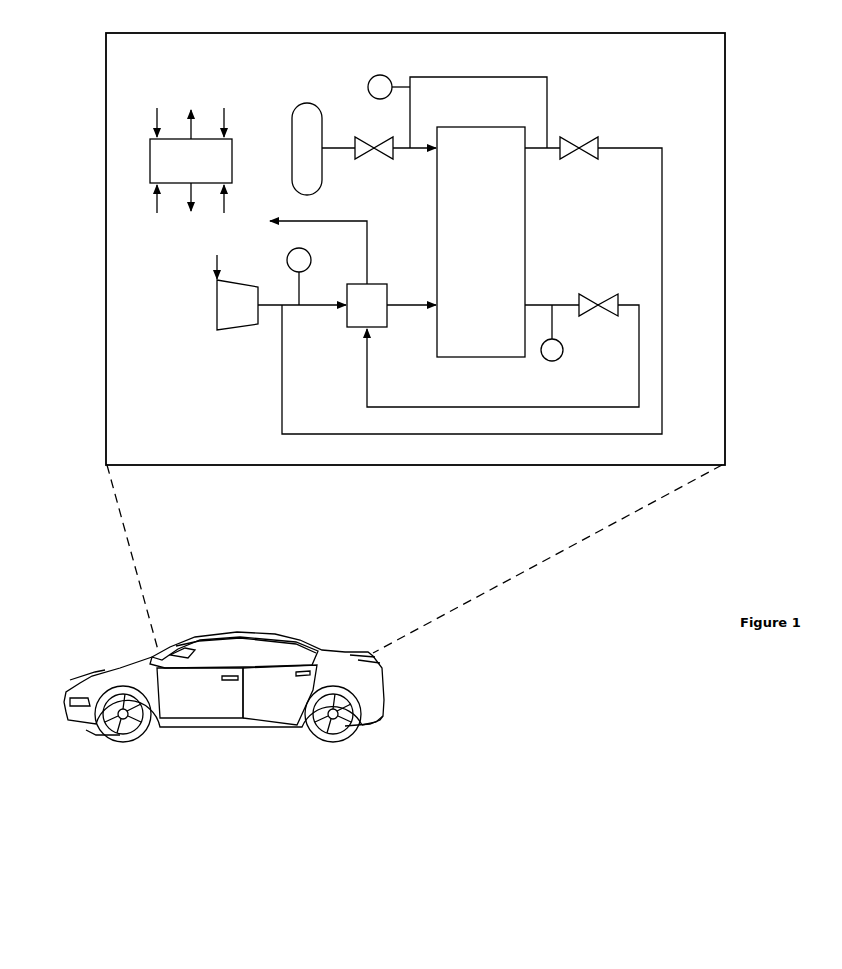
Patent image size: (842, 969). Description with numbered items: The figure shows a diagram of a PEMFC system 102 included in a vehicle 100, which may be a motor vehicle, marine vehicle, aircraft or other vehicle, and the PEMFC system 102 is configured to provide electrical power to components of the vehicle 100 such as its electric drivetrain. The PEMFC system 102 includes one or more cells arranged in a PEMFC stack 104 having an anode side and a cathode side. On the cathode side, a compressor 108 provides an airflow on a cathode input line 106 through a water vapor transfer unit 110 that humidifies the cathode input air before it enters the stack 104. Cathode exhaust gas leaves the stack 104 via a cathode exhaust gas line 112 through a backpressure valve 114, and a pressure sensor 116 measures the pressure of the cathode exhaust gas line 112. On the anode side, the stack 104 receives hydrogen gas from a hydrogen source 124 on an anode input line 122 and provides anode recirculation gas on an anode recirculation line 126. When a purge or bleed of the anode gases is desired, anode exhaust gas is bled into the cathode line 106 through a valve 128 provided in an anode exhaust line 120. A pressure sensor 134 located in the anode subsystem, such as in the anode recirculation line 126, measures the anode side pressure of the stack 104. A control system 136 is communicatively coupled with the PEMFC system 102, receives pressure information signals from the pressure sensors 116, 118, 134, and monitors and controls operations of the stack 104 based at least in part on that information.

The vehicle 100 is at (138, 658).
The PEMFC system 102 is at (143, 61).
The PEMFC stack 104 is at (493, 248).
The cathode input line 106 is at (270, 303).
The compressor 108 is at (250, 314).
The water vapor transfer unit 110 is at (379, 314).
The cathode exhaust gas line 112 is at (639, 355).
The backpressure valve 114 is at (594, 302).
The pressure sensor 116 is at (563, 348).
The pressure sensor 118 is at (311, 258).
The anode exhaust line 120 is at (662, 183).
The anode input line 122 is at (340, 150).
The hydrogen source 124 is at (291, 125).
The anode recirculation line 126 is at (547, 108).
The valve 128 is at (587, 155).
The pressure sensor 134 is at (368, 85).
The control system 136 is at (203, 169).